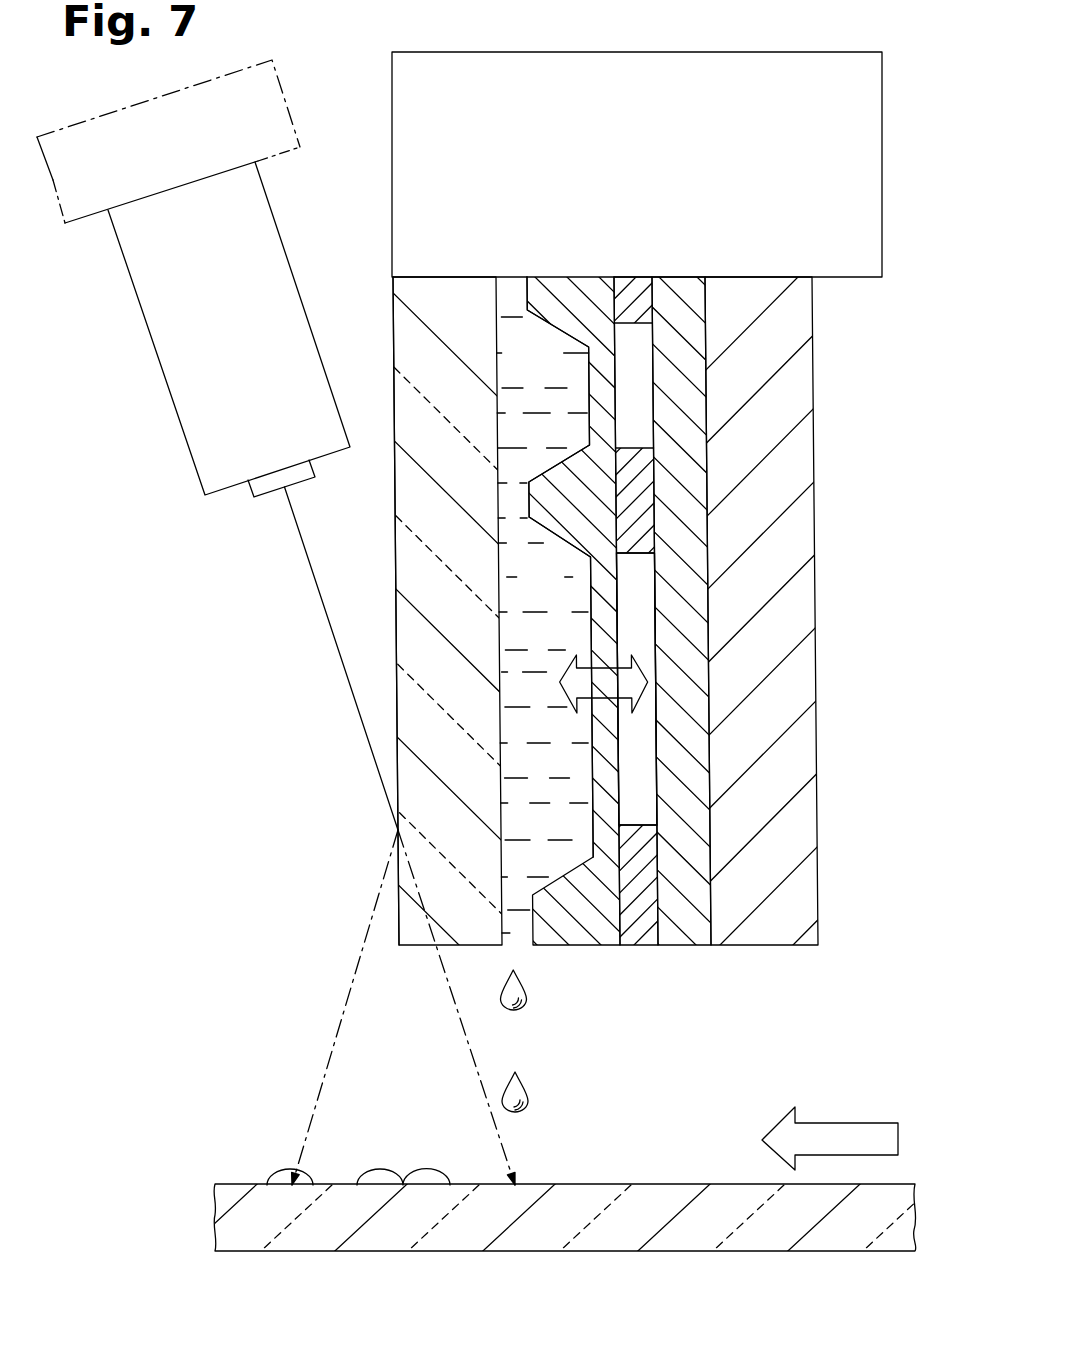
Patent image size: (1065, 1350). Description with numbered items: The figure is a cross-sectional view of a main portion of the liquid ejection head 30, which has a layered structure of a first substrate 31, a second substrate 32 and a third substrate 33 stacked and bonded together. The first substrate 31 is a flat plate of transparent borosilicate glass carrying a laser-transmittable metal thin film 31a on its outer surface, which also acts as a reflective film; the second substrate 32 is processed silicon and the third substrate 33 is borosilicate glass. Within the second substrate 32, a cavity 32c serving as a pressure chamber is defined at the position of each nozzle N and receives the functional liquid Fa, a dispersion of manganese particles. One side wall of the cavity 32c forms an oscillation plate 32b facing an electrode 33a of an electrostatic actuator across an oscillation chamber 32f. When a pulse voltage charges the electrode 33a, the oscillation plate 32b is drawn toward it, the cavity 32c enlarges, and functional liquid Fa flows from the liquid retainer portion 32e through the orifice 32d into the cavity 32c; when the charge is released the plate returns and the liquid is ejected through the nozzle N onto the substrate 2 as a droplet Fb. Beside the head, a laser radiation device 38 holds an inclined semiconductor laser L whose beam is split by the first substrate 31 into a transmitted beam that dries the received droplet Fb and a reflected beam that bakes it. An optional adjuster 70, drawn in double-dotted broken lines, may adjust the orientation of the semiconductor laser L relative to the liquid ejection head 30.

The substrate 2 is at (677, 1184).
The liquid ejection head 30 is at (830, 397).
The first substrate 31 is at (393, 550).
The metal thin film 31a is at (393, 502).
The second substrate 32 is at (586, 945).
The oscillation plate 32b is at (588, 616).
The cavity 32c is at (545, 529).
The orifice 32d is at (526, 500).
The liquid retainer portion 32e is at (546, 322).
The oscillation chamber 32f is at (651, 750).
The third substrate 33 is at (772, 945).
The electrode 33a is at (700, 653).
The laser radiation device 38 is at (176, 407).
The adjuster 70 is at (286, 103).
The semiconductor laser L is at (267, 494).
The nozzle N is at (512, 932).
The functional liquid Fa is at (545, 625).
The droplet Fb is at (282, 1173).